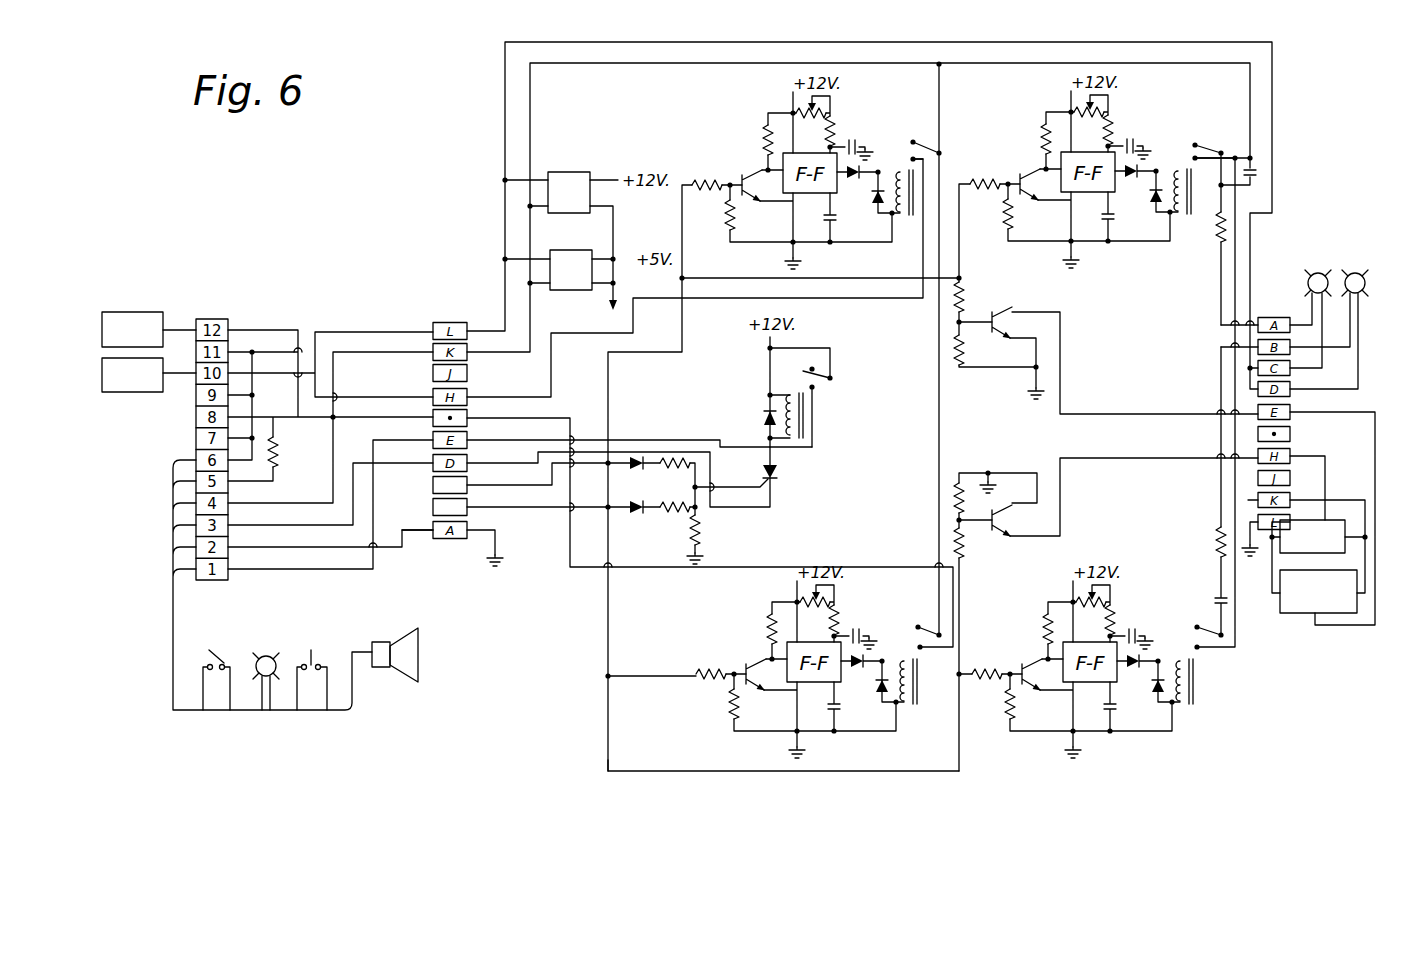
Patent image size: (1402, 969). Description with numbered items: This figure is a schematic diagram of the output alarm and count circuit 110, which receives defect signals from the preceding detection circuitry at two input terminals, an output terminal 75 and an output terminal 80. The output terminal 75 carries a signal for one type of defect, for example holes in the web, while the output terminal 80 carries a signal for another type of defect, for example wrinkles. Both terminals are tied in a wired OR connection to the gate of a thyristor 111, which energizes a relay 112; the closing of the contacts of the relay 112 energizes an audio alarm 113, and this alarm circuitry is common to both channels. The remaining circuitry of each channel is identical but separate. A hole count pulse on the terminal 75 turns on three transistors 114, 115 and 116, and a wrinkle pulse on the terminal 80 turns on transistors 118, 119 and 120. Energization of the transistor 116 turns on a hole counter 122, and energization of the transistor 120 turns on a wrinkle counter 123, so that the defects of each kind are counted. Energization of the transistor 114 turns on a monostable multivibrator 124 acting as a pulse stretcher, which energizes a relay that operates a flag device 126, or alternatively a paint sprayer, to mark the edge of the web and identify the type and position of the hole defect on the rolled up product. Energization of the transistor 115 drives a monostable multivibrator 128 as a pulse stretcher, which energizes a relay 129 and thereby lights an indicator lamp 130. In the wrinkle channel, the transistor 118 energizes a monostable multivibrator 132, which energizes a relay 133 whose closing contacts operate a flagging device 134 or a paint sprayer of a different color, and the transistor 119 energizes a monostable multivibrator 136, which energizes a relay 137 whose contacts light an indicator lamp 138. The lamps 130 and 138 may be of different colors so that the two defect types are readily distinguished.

The output terminal 75 is at (470, 487).
The output terminal 80 is at (470, 510).
The alarm and count circuit 110 is at (574, 787).
The thyristor 111 is at (780, 468).
The relay 112 is at (808, 412).
The alarm 113 is at (420, 655).
The transistor 114 is at (740, 178).
The transistor 115 is at (1022, 168).
The transistor 116 is at (1000, 306).
The transistor 118 is at (764, 660).
The transistor 119 is at (1040, 662).
The transistor 120 is at (1000, 512).
The hole counter 122 is at (1310, 512).
The wrinkle counter 123 is at (1306, 613).
The monostable multivibrator 124 is at (812, 160).
The flag device 126 is at (120, 392).
The monostable multivibrator 128 is at (1085, 160).
The relay 129 is at (1180, 218).
The indicator lamp 130 is at (1308, 274).
The monostable multivibrator 132 is at (822, 684).
The relay 133 is at (920, 694).
The flagging device 134 is at (113, 312).
The monostable multivibrator 136 is at (1098, 684).
The relay 137 is at (1196, 690).
The indicator lamp 138 is at (1346, 273).